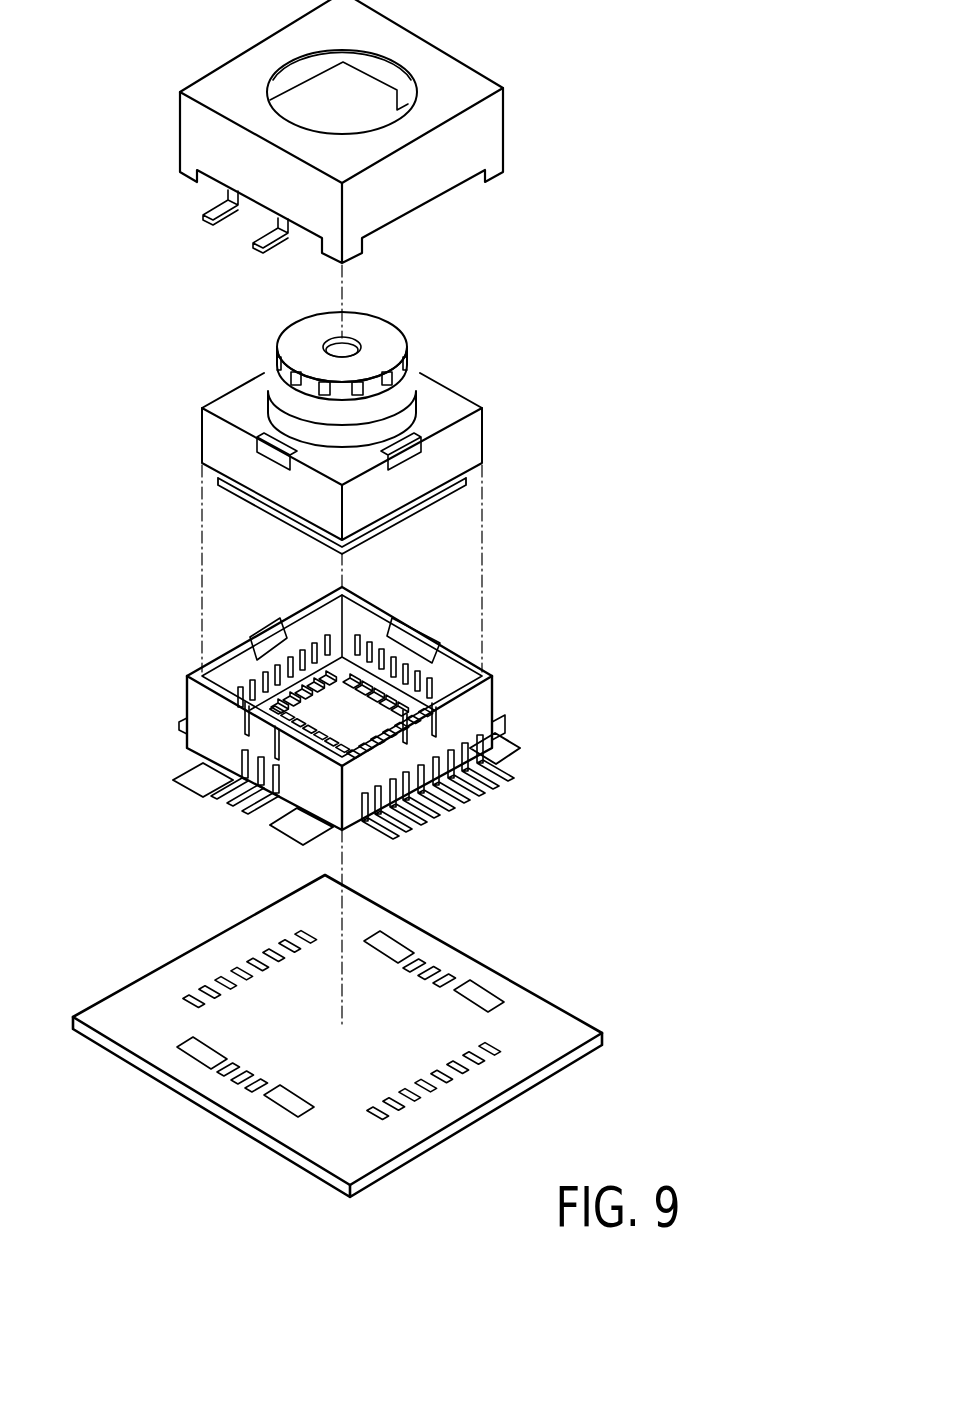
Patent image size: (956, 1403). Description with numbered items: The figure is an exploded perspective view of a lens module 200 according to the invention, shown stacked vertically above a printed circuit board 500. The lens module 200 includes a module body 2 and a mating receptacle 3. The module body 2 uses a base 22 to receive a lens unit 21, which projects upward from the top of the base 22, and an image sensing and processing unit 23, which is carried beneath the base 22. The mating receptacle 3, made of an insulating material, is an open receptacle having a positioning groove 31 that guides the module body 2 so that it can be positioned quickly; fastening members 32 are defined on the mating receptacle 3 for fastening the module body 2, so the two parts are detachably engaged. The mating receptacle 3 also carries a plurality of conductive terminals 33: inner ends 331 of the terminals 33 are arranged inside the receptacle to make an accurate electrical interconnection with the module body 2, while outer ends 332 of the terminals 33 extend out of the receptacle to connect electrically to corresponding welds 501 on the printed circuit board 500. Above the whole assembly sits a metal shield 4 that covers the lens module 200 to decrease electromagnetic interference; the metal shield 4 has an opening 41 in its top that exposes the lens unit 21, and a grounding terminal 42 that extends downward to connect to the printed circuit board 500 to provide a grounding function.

The metal shield 4 is at (376, 131).
The opening 41 is at (360, 95).
The grounding terminal 42 is at (210, 213).
The module body 2 is at (361, 433).
The lens unit 21 is at (293, 333).
The base 22 is at (200, 428).
The image sensing and processing unit 23 is at (257, 505).
The lens module 200 is at (390, 614).
The mating receptacle 3 is at (357, 697).
The positioning groove 31 is at (333, 717).
The fastening members 32 is at (267, 633).
The conductive terminals 33 is at (253, 827).
The inner ends 331 is at (270, 664).
The outer ends 332 is at (377, 830).
The printed circuit board 500 is at (337, 1036).
The welds 501 is at (290, 1098).